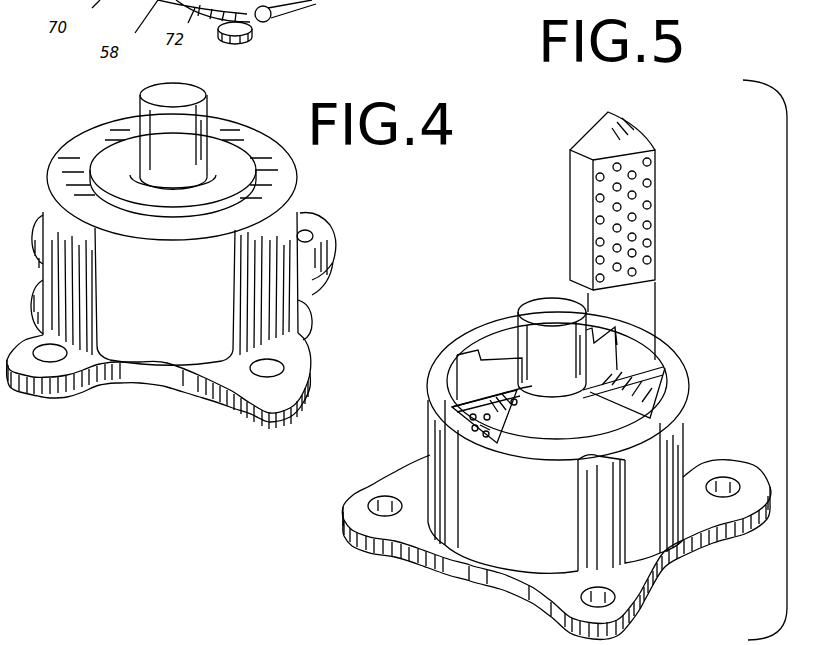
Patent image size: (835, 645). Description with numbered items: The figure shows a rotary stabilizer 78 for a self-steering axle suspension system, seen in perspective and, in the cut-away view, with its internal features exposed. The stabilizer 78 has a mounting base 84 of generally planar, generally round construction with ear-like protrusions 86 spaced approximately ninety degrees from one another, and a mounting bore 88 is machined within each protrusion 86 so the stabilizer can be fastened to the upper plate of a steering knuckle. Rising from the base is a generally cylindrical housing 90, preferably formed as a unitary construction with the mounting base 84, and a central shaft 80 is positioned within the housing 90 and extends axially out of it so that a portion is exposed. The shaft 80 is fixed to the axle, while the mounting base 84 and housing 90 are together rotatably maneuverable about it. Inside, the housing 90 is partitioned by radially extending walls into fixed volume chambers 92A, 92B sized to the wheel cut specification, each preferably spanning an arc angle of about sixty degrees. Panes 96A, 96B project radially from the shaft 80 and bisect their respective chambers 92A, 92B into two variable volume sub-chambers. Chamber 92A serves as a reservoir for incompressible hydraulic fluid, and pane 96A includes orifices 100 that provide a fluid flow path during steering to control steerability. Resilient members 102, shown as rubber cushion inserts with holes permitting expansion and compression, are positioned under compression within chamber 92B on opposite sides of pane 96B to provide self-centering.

In FIG. 4, the rotary stabilizer 78 is at (387, 204).
In FIG. 5, the rotary stabilizer 78 is at (740, 238).
In FIG. 4, the central shaft 80 is at (200, 93).
In FIG. 5, the central shaft 80 is at (540, 307).
In FIG. 4, the mounting base 84 is at (322, 277).
In FIG. 4, the ear-like protrusions 86 is at (40, 215).
In FIG. 4, the mounting bore 88 is at (300, 217).
In FIG. 4, the housing 90 is at (281, 171).
In FIG. 5, the housing 90 is at (680, 408).
In FIG. 5, the fixed volume chamber 92A is at (455, 380).
In FIG. 5, the fixed volume chamber 92B is at (632, 345).
In FIG. 5, the pane 96A is at (455, 412).
In FIG. 5, the pane 96B is at (648, 400).
In FIG. 5, the orifices 100 is at (473, 423).
In FIG. 5, the resilient members 102 is at (627, 130).